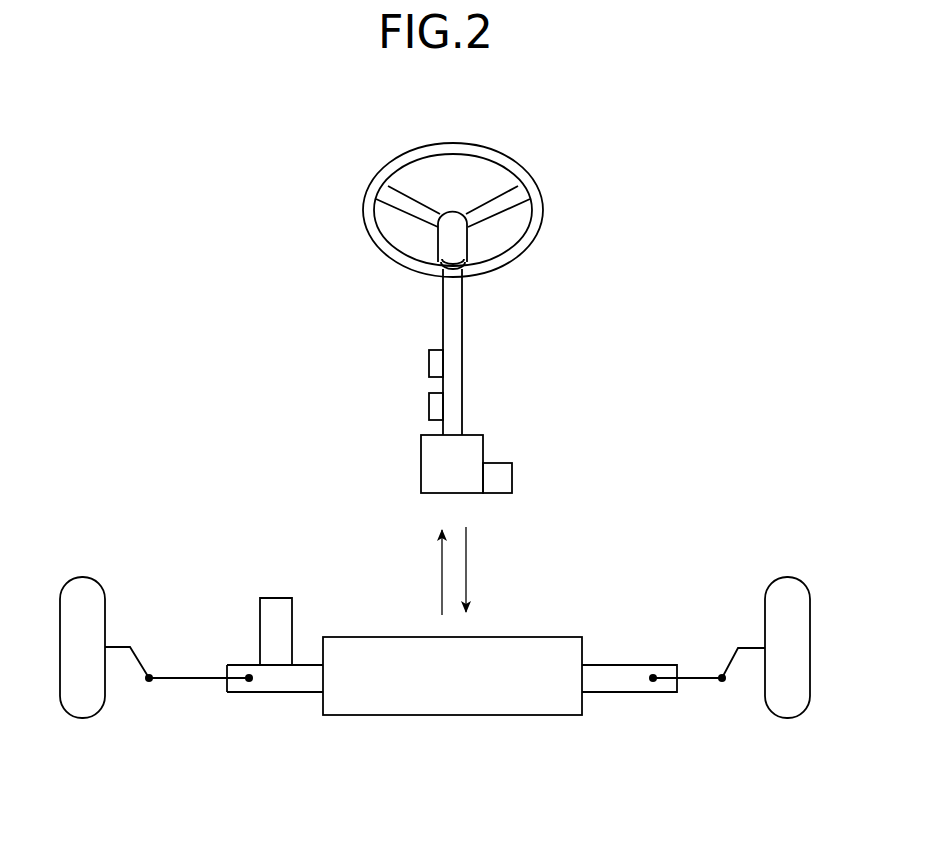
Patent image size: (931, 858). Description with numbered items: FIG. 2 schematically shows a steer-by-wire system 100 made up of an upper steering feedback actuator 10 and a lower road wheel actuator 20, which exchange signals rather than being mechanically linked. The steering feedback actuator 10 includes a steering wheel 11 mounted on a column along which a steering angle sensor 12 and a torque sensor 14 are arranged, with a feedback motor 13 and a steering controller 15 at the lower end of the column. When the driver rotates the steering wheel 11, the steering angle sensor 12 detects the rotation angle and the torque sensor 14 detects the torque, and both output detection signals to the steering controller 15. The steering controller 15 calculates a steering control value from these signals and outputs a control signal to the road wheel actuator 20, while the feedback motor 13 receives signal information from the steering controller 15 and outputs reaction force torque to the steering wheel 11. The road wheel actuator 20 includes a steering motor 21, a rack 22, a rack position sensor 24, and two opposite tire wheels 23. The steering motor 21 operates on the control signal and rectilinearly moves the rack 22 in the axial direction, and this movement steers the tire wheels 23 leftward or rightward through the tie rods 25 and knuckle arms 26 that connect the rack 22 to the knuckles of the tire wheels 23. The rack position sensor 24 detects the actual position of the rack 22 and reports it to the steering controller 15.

The steer-by-wire (SbW) system 100 is at (186, 135).
The steering feedback actuator 10 is at (546, 402).
The steering wheel 11 is at (366, 210).
The steering angle sensor 12 is at (429, 367).
The feedback motor 13 is at (438, 469).
The torque sensor 14 is at (429, 408).
The steering controller 15 is at (500, 476).
The road wheel actuator 20 is at (613, 597).
The steering motor 21 is at (447, 715).
The rack 22 is at (287, 692).
The tire wheel 23 is at (788, 700).
The rack position sensor 24 is at (278, 598).
The tie rod 25 is at (178, 680).
The knuckle arm 26 is at (129, 646).